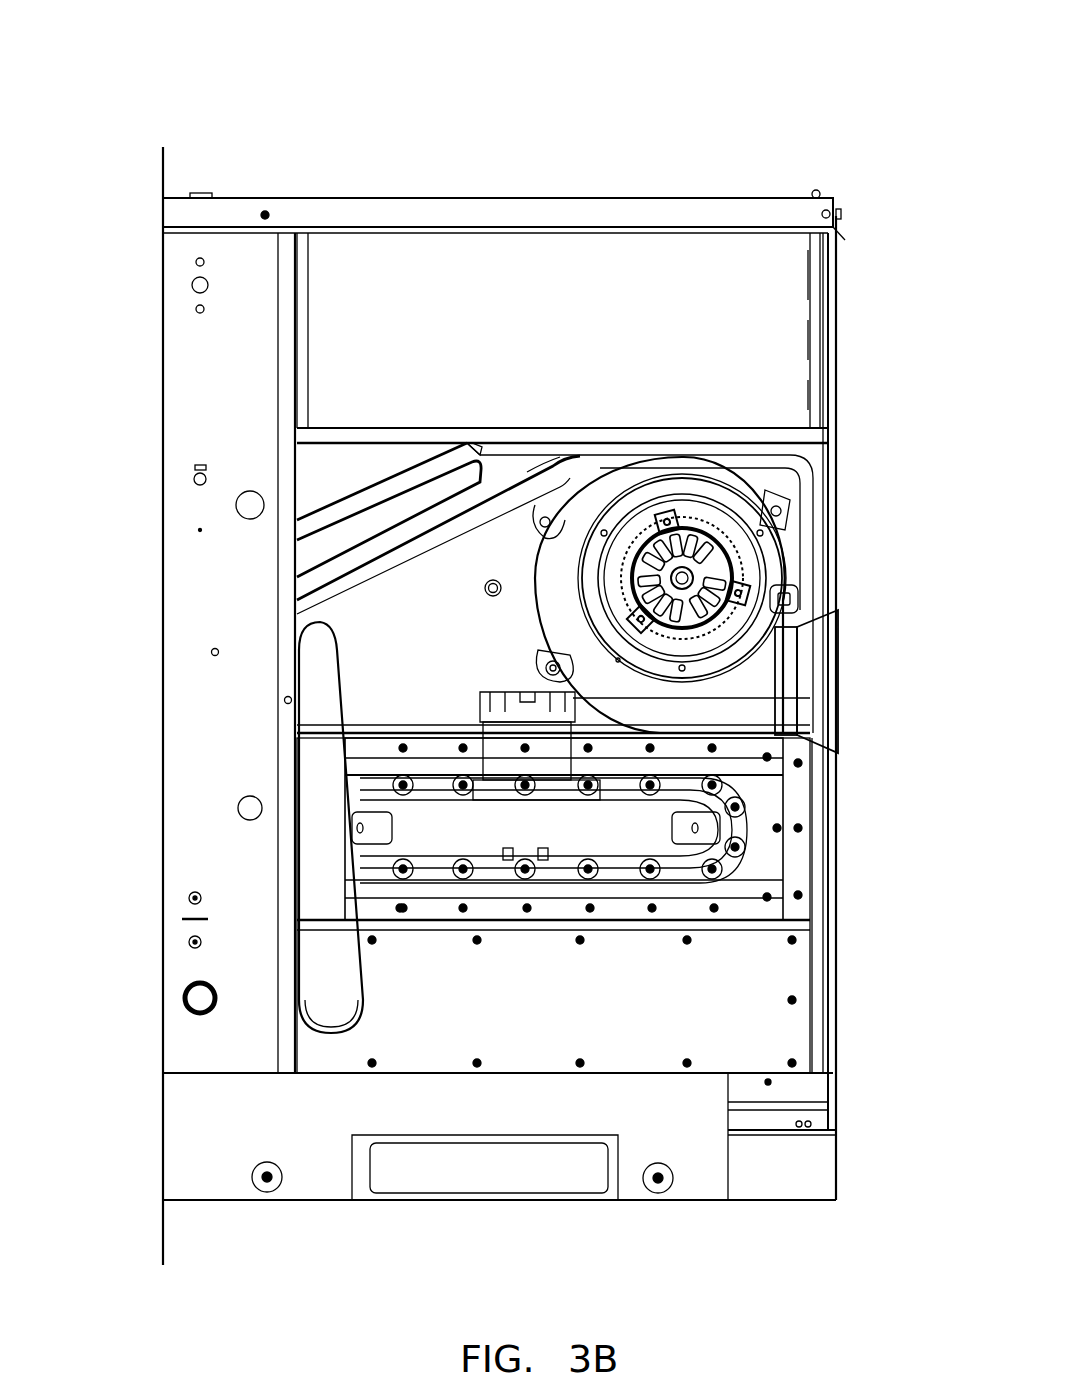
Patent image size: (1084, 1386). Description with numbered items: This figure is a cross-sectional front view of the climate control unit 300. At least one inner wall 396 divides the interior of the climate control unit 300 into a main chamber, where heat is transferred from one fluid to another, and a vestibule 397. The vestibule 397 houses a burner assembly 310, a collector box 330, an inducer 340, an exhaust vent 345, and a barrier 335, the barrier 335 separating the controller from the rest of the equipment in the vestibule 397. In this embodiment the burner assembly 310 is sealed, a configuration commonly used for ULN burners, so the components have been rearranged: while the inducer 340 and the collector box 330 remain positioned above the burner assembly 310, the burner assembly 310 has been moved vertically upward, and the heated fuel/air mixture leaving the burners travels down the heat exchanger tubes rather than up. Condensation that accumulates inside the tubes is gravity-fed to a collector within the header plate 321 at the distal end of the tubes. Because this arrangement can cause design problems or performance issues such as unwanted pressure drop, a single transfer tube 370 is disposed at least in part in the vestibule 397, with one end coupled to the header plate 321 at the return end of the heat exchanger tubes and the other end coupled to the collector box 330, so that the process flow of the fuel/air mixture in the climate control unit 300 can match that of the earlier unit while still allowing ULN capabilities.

The climate control unit 300 is at (186, 85).
The burner assembly 310 is at (723, 850).
The header plate 321 is at (818, 1010).
The collector box 330 is at (365, 632).
The barrier 335 is at (378, 477).
The inducer 340 is at (340, 573).
The exhaust vent 345 is at (850, 678).
The transfer tube 370 is at (318, 848).
The inner wall 396 is at (523, 555).
The vestibule 397 is at (442, 492).